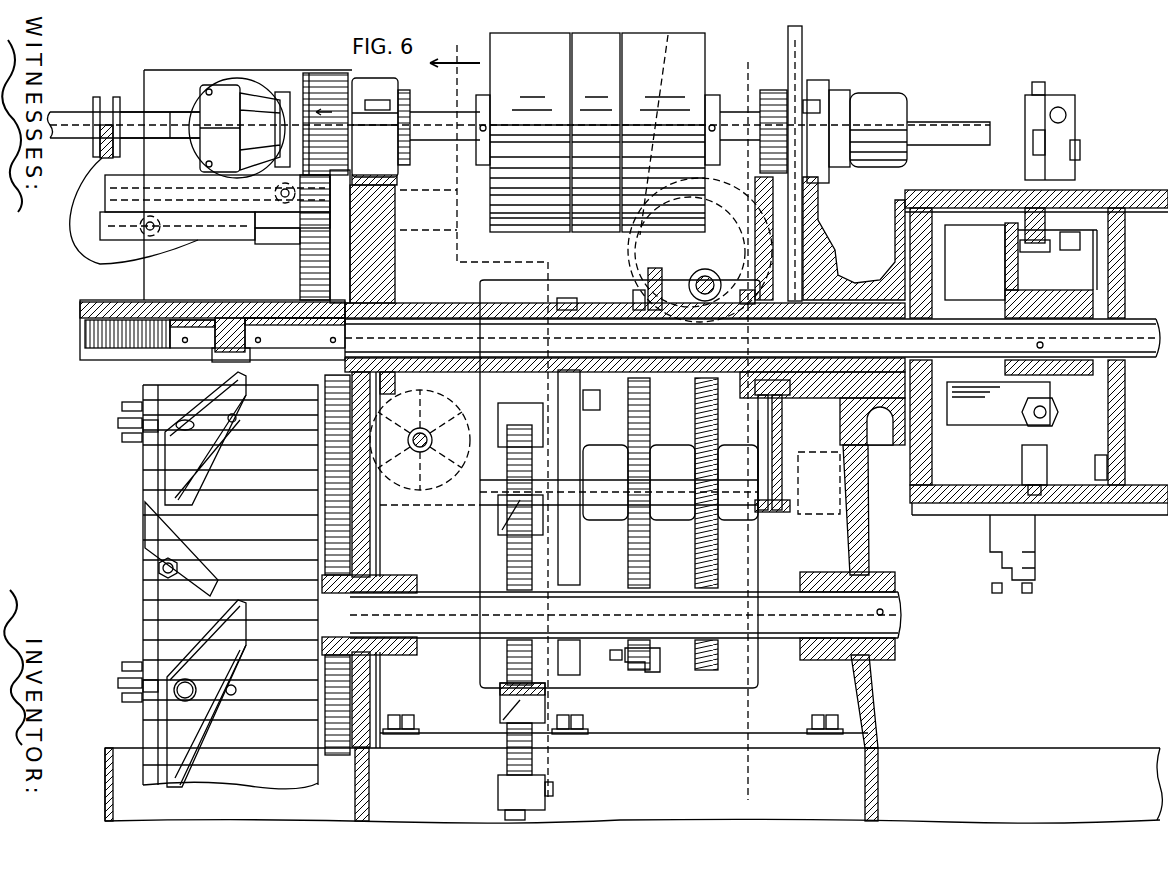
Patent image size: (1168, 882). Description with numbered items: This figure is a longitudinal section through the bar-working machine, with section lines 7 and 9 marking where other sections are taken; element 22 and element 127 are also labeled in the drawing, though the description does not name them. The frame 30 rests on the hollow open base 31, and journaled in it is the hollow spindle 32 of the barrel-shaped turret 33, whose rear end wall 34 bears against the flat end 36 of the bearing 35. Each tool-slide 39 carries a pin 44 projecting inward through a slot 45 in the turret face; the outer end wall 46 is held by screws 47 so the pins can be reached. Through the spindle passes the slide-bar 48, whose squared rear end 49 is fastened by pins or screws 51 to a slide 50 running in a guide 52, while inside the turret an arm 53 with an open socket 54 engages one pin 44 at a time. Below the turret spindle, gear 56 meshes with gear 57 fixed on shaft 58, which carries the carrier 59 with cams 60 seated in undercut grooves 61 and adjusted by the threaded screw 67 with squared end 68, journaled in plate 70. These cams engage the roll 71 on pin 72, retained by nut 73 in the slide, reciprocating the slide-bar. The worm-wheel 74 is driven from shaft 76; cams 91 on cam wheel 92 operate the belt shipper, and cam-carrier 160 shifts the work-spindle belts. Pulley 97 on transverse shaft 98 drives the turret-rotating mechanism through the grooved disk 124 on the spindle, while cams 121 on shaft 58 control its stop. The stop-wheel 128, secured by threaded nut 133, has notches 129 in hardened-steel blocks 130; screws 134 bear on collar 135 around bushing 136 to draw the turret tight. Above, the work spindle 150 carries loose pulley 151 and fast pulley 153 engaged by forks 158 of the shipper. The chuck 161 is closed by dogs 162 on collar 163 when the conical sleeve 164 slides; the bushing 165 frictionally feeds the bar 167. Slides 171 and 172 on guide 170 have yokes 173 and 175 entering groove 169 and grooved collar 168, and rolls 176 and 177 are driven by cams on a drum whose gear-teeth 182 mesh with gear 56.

The section line 7 7 is at (736, 428).
The section line 9 9 is at (552, 811).
The bearing block 22 is at (520, 660).
The frame 30 is at (874, 688).
The hollow open base 31 is at (108, 778).
The hollow spindle 32 is at (466, 308).
The turret 33 is at (930, 206).
The rear end wall 34 is at (958, 440).
The bearing 35 is at (850, 282).
The flat end 36 is at (882, 258).
The tool-slide 39 is at (1118, 192).
The pin 44 is at (1095, 248).
The slot 45 is at (975, 214).
The outer end wall 46 is at (1125, 410).
The screws 47 is at (1110, 468).
The slide-bar 48 is at (1122, 340).
The rear end 49 is at (280, 308).
The slide 50 is at (168, 305).
The pins or screws 51 is at (182, 346).
The guide 52 is at (75, 318).
The arm 53 is at (1110, 294).
The groove or open socket 54 is at (1055, 256).
The larger gear 56 is at (427, 386).
The gear 57 is at (342, 754).
The shaft 58 is at (776, 602).
The carrier 59 is at (143, 587).
The cams 60 is at (180, 450).
The grooves 61 is at (150, 428).
The threaded screw 67 is at (120, 436).
The squared end 68 is at (118, 424).
The plate 70 is at (130, 404).
The roll 71 is at (250, 360).
The pin 72 is at (233, 318).
The nut 73 is at (176, 306).
The worm-wheel 74 is at (700, 554).
The shaft 76 is at (696, 272).
The cams 91 is at (655, 670).
The cam carrier or wheel 92 is at (632, 562).
The pulley 97 is at (429, 513).
The transverse shaft 98 is at (420, 440).
The cams 121 is at (508, 408).
The disk or member 124 is at (628, 240).
The shaft 127 is at (770, 330).
The stop-wheel 128 is at (815, 190).
The notch 129 is at (762, 514).
The hardened-steel block 130 is at (790, 508).
The threaded nut 133 is at (738, 276).
The screws 134 is at (740, 423).
The collar 135 is at (797, 402).
The bushing 136 is at (822, 216).
The spindle 150 is at (424, 110).
The loose pulley 151 is at (530, 132).
The fast pulley 153 is at (596, 132).
The forks 158 is at (663, 134).
The cam-carrier 160 is at (170, 112).
The chuck 161 is at (897, 96).
The dogs 162 is at (246, 82).
The collar 163 is at (212, 116).
The conical sleeve 164 is at (285, 92).
The bushing 165 is at (148, 110).
The bar or work 167 is at (67, 118).
The grooved collar 168 is at (104, 108).
The groove 169 is at (322, 86).
The guide 170 is at (286, 226).
The slide 171 is at (118, 203).
The slide 172 is at (105, 238).
The yoke 173 is at (354, 138).
The yoke 175 is at (72, 247).
The roll 176 is at (242, 238).
The roll 177 is at (118, 250).
The gear-teeth 182 is at (395, 250).